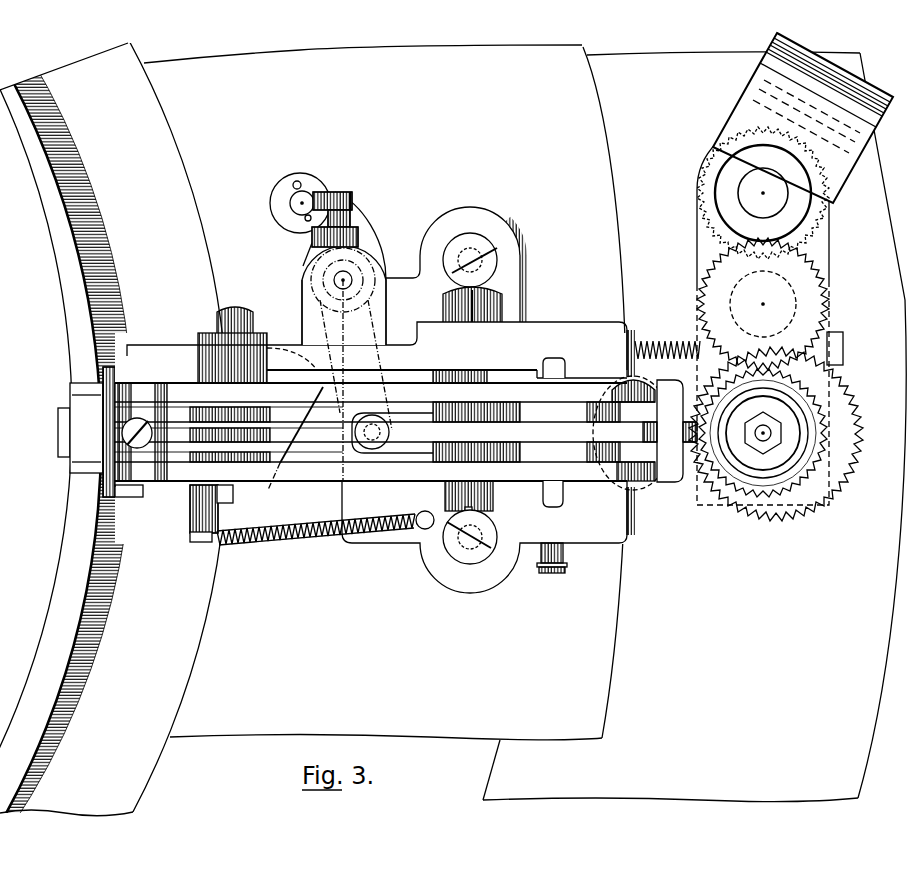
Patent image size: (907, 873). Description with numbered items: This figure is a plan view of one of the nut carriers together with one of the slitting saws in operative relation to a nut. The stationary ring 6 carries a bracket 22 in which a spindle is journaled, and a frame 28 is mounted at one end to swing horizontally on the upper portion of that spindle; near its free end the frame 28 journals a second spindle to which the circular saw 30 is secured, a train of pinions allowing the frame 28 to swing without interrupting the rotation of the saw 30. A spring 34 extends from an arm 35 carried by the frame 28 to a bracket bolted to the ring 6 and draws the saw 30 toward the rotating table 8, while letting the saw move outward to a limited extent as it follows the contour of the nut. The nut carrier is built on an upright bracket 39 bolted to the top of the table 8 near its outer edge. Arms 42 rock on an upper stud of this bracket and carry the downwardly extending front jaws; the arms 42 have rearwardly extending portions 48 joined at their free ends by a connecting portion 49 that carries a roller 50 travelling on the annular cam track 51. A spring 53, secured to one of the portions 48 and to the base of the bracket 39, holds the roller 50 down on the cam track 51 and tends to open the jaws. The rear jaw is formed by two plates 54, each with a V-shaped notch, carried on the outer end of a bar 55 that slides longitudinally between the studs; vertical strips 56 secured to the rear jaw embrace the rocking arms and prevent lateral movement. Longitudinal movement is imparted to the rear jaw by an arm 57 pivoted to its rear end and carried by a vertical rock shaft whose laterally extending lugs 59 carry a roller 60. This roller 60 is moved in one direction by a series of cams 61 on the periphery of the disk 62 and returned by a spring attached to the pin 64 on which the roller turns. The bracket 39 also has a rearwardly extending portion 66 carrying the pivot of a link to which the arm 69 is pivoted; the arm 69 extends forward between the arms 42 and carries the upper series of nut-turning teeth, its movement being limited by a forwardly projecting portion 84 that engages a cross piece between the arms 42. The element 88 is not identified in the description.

The ring 6 is at (694, 427).
The table 8 is at (385, 392).
The bracket 22 is at (845, 178).
The frame 28 is at (830, 253).
The saw 30 is at (866, 432).
The spring 34 is at (660, 342).
The arm 35 is at (847, 343).
The bracket 39 is at (597, 535).
The arm 42 is at (537, 477).
The rearwardly extending portion 48 is at (350, 387).
The connecting portion 49 is at (160, 483).
The roller 50 is at (80, 468).
The cam track 51 is at (72, 568).
The spring 53 is at (308, 542).
The plate 54 is at (575, 405).
The bar 55 is at (417, 452).
The vertical strip 56 is at (555, 360).
The arm 57 is at (384, 326).
The lug 59 is at (357, 213).
The roller 60 is at (282, 190).
The cam 61 is at (163, 353).
The disk 62 is at (114, 436).
The pin 64 is at (307, 202).
The rearwardly-extending portion 66 is at (265, 342).
The arm 69 is at (403, 426).
The forwardly-projecting portion 84 is at (670, 483).
The lug 88 is at (133, 498).